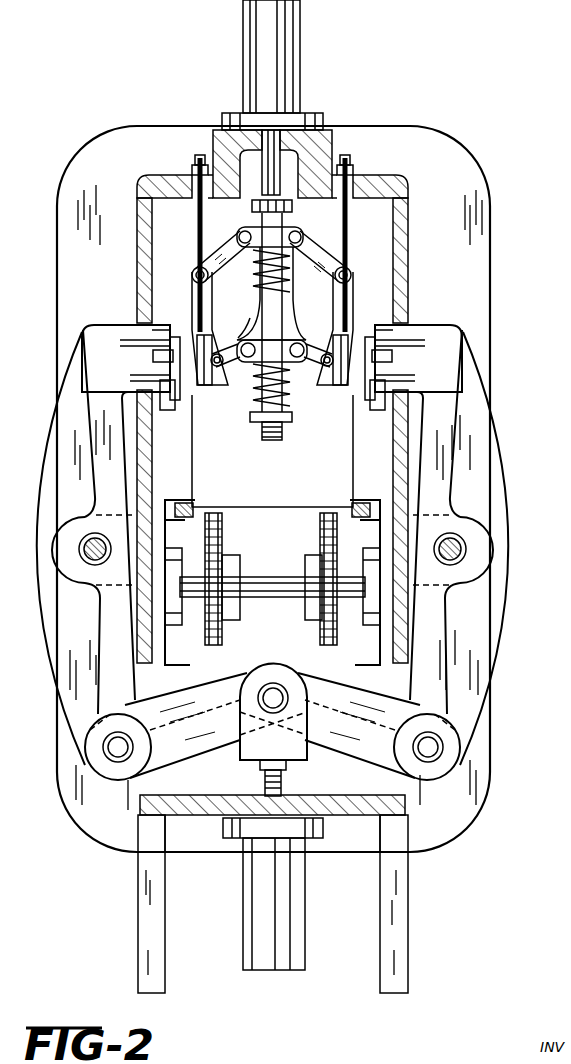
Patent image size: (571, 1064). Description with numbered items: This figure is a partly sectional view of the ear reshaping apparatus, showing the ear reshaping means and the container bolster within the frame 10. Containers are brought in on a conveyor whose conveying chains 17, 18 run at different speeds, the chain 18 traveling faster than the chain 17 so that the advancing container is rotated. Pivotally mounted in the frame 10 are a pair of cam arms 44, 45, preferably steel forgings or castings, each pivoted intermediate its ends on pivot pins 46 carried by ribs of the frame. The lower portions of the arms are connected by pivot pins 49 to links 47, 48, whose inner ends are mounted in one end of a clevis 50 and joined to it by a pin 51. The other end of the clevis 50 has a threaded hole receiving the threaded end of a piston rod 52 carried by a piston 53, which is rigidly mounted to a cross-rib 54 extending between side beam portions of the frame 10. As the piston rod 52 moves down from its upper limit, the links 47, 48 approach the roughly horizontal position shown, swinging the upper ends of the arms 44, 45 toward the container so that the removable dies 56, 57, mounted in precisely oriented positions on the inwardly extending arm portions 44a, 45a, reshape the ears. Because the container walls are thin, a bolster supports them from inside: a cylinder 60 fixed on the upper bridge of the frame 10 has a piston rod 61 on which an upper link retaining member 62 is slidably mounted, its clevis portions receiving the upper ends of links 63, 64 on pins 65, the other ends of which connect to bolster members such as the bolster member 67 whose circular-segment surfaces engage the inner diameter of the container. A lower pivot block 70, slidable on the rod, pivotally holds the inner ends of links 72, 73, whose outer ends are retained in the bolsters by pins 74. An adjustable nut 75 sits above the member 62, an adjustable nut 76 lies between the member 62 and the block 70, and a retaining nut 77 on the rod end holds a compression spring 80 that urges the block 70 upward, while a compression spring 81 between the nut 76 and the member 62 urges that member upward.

The frame 10 is at (448, 150).
The cylinder 60 is at (298, 55).
The piston rod 61 is at (293, 170).
The adjustable nut 75 is at (258, 204).
The upper link retaining member 62 is at (292, 229).
The link 63 is at (330, 262).
The link 64 is at (228, 252).
The pins 65 is at (342, 282).
The bolster member 67 is at (204, 310).
The removable die 56 is at (362, 336).
The lower pivot block 70 is at (250, 320).
The adjustable nut 76 is at (290, 324).
The compression spring 81 is at (285, 271).
The link 72 is at (300, 370).
The link 73 is at (244, 372).
The pins 74 is at (325, 398).
The retaining nut 77 is at (265, 430).
The compression spring 80 is at (284, 413).
The removable die 57 is at (175, 370).
The inwardly extending portion 45a is at (86, 342).
The inwardly extending portion 44a is at (430, 342).
The cam arm 45 is at (60, 447).
The cam arm 44 is at (495, 468).
The pivot pins 46 is at (460, 552).
The conveying chain 18 is at (222, 540).
The conveying chain 17 is at (320, 526).
The clevis 50 is at (248, 672).
The pin 51 is at (278, 690).
The piston rod 52 is at (285, 790).
The link 48 is at (200, 752).
The link 47 is at (380, 752).
The pivot pins 49 is at (430, 748).
The cross-rib 54 is at (365, 850).
The piston 53 is at (303, 932).